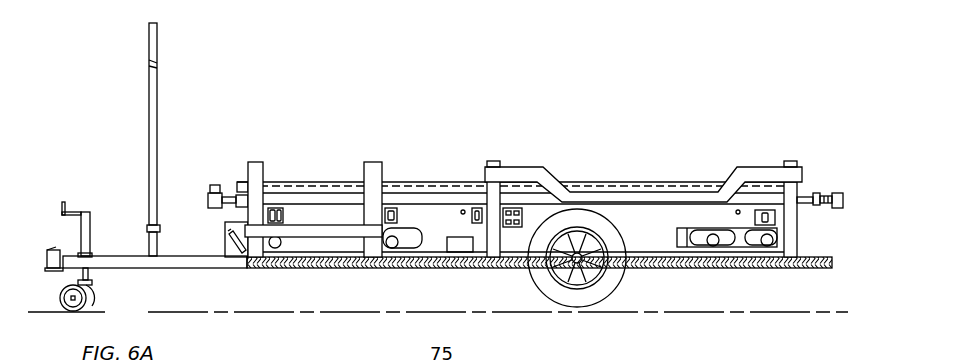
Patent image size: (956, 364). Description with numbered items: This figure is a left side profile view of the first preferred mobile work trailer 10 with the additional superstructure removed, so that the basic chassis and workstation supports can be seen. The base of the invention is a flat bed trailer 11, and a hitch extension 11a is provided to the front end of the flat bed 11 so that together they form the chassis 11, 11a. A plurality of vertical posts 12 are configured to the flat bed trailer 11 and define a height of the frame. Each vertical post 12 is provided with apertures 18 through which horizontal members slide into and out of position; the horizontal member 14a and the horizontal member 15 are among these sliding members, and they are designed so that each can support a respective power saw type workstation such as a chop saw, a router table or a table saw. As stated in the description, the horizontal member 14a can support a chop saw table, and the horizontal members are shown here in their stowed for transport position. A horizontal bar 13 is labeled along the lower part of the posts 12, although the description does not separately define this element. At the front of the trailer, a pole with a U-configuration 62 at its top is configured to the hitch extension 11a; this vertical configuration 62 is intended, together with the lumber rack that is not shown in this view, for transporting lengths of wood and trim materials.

The mobile work trailer 10 is at (579, 91).
The flat bed trailer 11 is at (803, 270).
The hitch extension 11a is at (137, 268).
The vertical posts 12 is at (257, 265).
The horizontal bar 13 is at (320, 237).
The horizontal member 14a is at (518, 173).
The horizontal member 15 is at (837, 193).
The apertures 18 is at (812, 194).
The pole with a U-configuration 62 is at (158, 96).